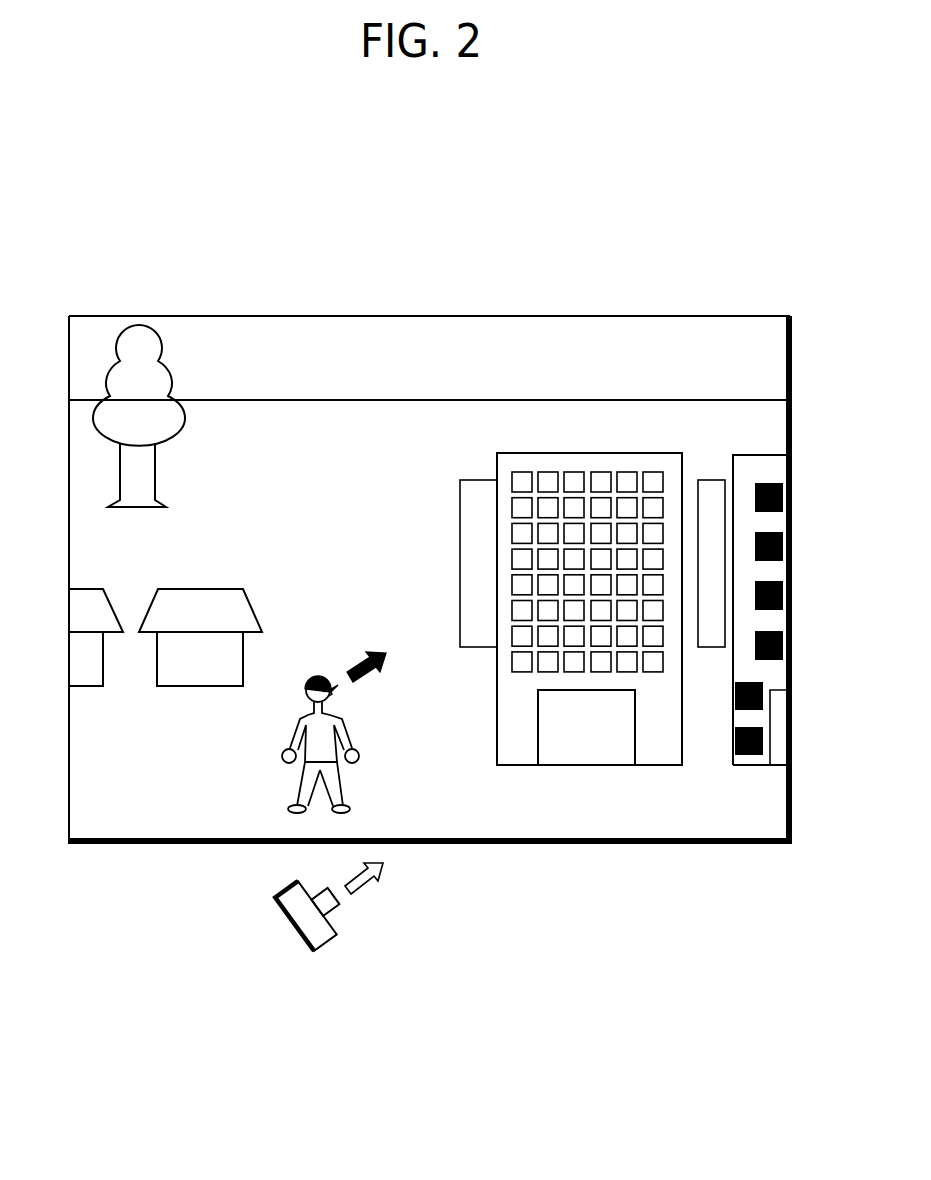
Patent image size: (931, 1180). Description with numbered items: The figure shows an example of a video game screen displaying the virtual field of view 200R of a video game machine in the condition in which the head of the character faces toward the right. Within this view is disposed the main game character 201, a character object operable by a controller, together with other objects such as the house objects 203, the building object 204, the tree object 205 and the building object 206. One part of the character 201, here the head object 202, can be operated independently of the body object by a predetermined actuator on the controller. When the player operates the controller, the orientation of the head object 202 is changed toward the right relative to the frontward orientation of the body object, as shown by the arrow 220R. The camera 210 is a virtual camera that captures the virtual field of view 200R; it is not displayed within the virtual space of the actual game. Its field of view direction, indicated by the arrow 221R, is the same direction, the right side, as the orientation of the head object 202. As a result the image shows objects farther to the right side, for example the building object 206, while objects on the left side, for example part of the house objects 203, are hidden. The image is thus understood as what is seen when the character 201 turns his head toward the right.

The virtual field of view 200R is at (668, 316).
The main game character 201 is at (339, 738).
The head object 202 is at (306, 686).
The house objects 203 is at (167, 589).
The building object 204 is at (497, 460).
The tree object 205 is at (155, 468).
The building object 206 is at (733, 457).
The camera 210 is at (323, 950).
The arrow 220R is at (355, 663).
The arrow 221R is at (371, 876).